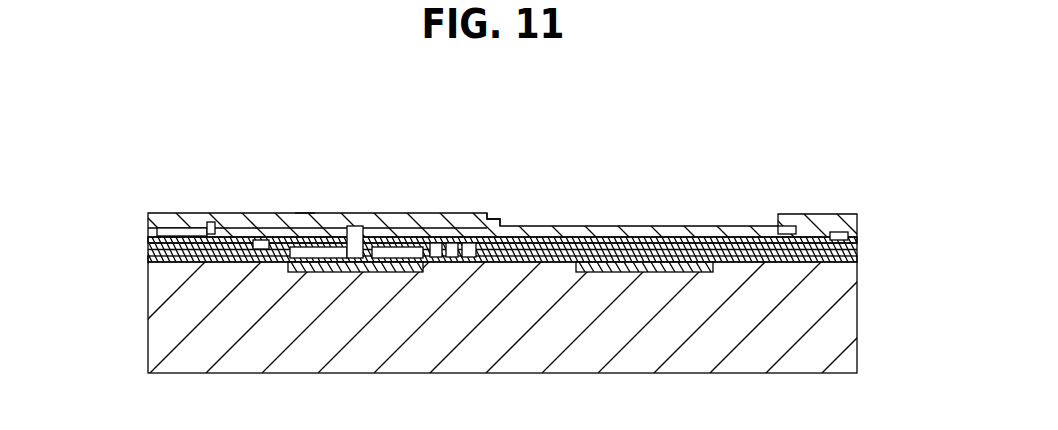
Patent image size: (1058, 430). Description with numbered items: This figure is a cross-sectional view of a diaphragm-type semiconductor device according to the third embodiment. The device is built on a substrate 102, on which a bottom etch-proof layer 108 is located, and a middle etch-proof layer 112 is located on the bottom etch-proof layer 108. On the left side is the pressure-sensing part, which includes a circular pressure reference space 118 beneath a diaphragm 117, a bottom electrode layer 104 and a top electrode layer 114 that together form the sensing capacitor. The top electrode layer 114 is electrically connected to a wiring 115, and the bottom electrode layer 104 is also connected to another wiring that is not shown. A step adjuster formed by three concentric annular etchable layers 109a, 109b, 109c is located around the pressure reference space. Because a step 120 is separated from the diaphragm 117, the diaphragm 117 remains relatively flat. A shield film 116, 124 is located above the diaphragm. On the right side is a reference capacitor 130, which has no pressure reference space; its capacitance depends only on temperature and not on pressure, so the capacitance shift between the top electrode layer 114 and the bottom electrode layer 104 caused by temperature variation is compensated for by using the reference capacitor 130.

The substrate 102 is at (220, 348).
The bottom electrode layer 104 is at (313, 270).
The bottom etch-proof layer 108 is at (150, 257).
The etchable layer 109a is at (433, 257).
The etchable layer 109b is at (452, 257).
The etchable layer 109c is at (470, 257).
The middle etch-proof layer 112 is at (332, 247).
The top electrode layer 114 is at (262, 240).
The wiring 115 is at (150, 238).
The shield film 116 is at (228, 232).
The diaphragm 117 is at (305, 212).
The pressure reference space 118 is at (405, 247).
The step 120 is at (212, 228).
The shield film 124 is at (355, 236).
The reference capacitor 130 is at (647, 224).